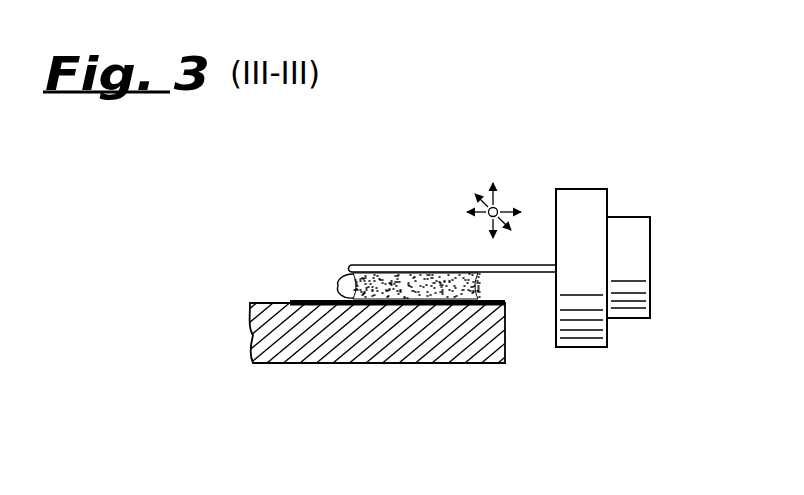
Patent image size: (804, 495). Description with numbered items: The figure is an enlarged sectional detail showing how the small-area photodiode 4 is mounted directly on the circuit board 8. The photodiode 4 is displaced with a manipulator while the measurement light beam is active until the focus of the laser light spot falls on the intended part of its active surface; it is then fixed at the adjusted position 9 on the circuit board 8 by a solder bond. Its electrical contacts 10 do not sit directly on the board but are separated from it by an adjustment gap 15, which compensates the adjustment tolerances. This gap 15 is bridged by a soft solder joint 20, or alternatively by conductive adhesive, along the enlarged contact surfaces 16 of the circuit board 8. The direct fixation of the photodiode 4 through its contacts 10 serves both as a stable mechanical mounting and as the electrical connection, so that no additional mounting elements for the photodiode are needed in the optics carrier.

The small-area photodiode 4 is at (628, 237).
The circuit board 8 is at (352, 347).
The adjusted position 9 is at (501, 206).
The electrical contacts 10 is at (403, 265).
The adjustment gap 15 is at (337, 285).
The enlarged contact surfaces 16 is at (300, 298).
The soft solder joint 20 is at (423, 275).